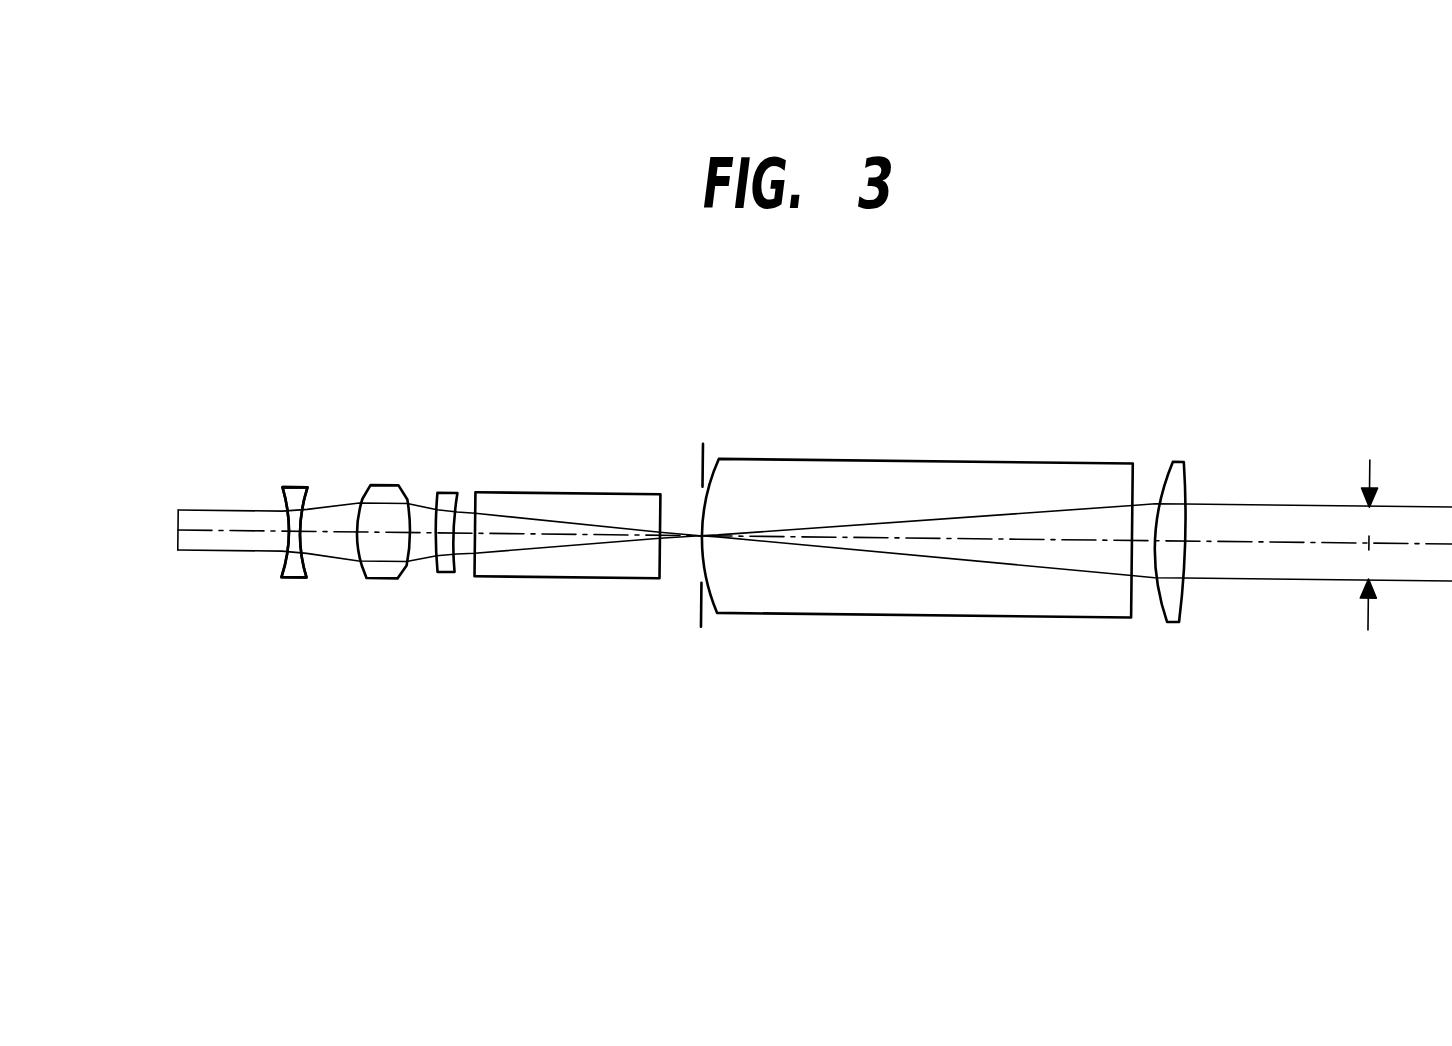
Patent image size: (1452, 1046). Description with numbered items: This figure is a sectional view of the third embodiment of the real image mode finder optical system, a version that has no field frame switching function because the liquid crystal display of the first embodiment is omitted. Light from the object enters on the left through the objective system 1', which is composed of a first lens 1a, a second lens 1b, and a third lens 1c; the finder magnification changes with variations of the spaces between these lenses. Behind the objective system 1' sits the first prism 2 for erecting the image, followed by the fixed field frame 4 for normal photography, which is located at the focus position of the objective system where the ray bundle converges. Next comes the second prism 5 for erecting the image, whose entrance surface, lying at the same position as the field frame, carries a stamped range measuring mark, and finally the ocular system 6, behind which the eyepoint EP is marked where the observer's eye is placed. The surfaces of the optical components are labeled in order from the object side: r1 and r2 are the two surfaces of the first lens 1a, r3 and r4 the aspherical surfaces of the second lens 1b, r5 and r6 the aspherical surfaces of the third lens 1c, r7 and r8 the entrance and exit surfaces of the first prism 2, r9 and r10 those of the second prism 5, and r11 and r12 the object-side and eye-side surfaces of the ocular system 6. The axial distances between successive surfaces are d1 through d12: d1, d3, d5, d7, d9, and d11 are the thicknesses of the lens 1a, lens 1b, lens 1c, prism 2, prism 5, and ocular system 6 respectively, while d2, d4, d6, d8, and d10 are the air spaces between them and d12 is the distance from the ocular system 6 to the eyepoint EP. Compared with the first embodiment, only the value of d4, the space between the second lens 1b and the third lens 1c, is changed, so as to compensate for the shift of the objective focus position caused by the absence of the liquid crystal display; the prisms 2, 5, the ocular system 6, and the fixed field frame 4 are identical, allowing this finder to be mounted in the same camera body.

The objective system 1' is at (367, 645).
The first lens 1a is at (296, 485).
The second lens 1b is at (390, 482).
The third lens 1c is at (447, 488).
The first prism 2 is at (563, 488).
The fixed field frame 4 is at (704, 441).
The second prism 5 is at (916, 470).
The ocular system 6 is at (1176, 451).
The eyepoint EP is at (1371, 523).
The radius of curvature of first surface r1 is at (284, 494).
The radius of curvature of second surface r2 is at (310, 493).
The radius of curvature of third surface r3 is at (367, 495).
The radius of curvature of fourth surface r4 is at (408, 496).
The radius of curvature of fifth surface r5 is at (438, 491).
The radius of curvature of sixth surface r6 is at (455, 490).
The radius of curvature of seventh surface r7 is at (482, 490).
The radius of curvature of eighth surface r8 is at (660, 507).
The radius of curvature of ninth surface r9 is at (708, 481).
The radius of curvature of tenth surface r10 is at (1130, 467).
The radius of curvature of eleventh surface r11 is at (1170, 452).
The radius of curvature of twelfth surface r12 is at (1186, 474).
The first surface distance d1 is at (295, 533).
The second surface distance d2 is at (330, 534).
The third surface distance d3 is at (383, 533).
The fourth surface distance d4 is at (422, 533).
The fifth surface distance d5 is at (445, 533).
The sixth surface distance d6 is at (465, 533).
The seventh surface distance d7 is at (565, 531).
The eighth surface distance d8 is at (680, 531).
The ninth surface distance d9 is at (920, 530).
The tenth surface distance d10 is at (1143, 532).
The eleventh surface distance d11 is at (1168, 532).
The twelfth surface distance d12 is at (1276, 532).